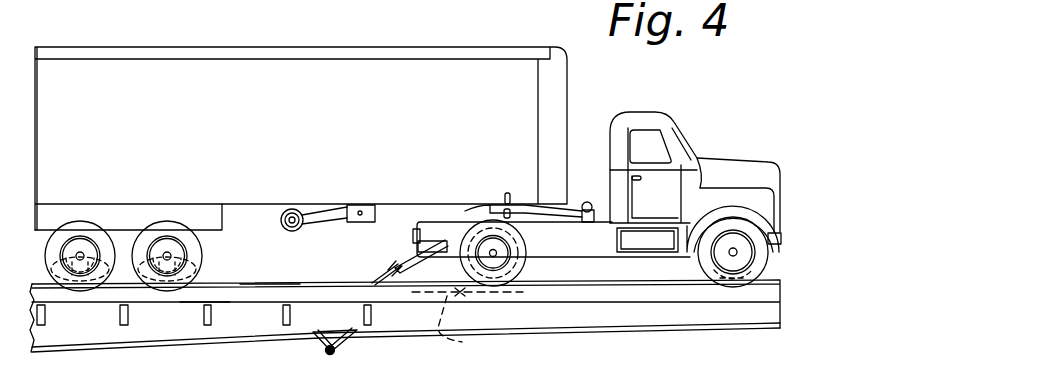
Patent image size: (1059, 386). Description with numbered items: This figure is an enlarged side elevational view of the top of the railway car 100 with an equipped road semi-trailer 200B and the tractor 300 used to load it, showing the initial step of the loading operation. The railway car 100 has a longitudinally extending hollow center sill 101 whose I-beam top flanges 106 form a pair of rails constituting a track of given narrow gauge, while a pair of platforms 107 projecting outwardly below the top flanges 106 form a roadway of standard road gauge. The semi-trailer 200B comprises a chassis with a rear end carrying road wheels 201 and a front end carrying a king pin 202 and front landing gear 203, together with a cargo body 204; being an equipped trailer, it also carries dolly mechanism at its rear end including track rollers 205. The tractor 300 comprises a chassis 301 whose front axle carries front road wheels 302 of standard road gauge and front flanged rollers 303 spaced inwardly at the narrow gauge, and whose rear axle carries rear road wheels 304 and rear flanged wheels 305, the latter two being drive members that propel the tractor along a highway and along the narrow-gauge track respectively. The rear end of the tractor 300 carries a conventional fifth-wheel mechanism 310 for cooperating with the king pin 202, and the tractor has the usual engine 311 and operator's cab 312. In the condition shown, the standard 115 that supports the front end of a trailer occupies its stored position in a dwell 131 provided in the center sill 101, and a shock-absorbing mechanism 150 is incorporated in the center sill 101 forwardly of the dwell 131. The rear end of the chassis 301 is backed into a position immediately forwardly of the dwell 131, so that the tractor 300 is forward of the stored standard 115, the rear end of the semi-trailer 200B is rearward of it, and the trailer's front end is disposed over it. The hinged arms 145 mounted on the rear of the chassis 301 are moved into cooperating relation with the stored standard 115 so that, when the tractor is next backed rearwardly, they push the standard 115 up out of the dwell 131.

The railway car 100 is at (550, 339).
The center sill 101 is at (176, 333).
The top flanges 106 is at (265, 283).
The platforms 107 is at (197, 299).
The standard 115 is at (343, 338).
The dwell 131 is at (330, 355).
The arms 145 is at (400, 253).
The shock-absorbing mechanism 150 is at (467, 321).
The road semi-trailer of the second type 200B is at (155, 169).
The road wheels 201 is at (152, 231).
The king pin 202 is at (505, 197).
The front landing gear 203 is at (306, 222).
The body 204 is at (567, 92).
The track rollers 205 is at (193, 264).
The tractor 300 is at (706, 152).
The chassis 301 is at (553, 239).
The front road wheels 302 is at (703, 262).
The front flanged rollers 303 is at (722, 283).
The rear road wheels 304 is at (523, 266).
The rear flanged wheels 305 is at (518, 233).
The fifth-wheel mechanism 310 is at (518, 204).
The engine 311 is at (728, 169).
The operator's cab 312 is at (637, 113).